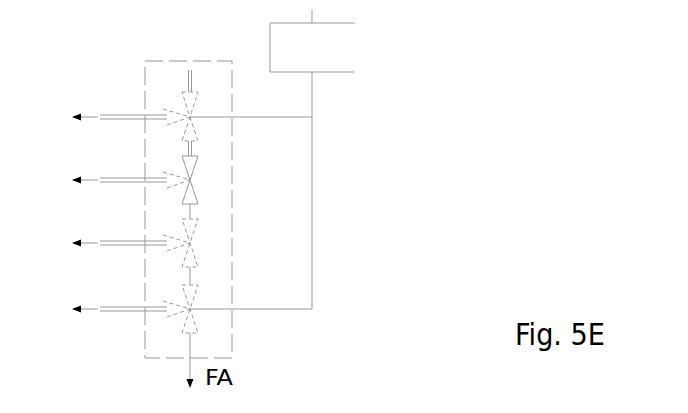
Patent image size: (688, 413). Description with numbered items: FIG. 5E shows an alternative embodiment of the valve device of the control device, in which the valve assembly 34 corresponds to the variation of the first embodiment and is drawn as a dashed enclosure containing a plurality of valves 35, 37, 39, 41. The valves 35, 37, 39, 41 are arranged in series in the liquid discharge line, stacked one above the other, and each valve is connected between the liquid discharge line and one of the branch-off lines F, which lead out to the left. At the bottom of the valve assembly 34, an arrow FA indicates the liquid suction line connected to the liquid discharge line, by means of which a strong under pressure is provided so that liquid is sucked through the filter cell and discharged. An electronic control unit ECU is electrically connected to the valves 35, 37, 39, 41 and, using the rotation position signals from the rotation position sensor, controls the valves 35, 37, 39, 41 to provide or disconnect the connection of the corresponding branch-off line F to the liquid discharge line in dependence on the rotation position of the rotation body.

The valve assembly 34 is at (220, 332).
The valve 35 is at (187, 115).
The valve 37 is at (187, 178).
The valve 39 is at (187, 241).
The valve 41 is at (187, 307).
The electronic control unit ECU is at (272, 159).